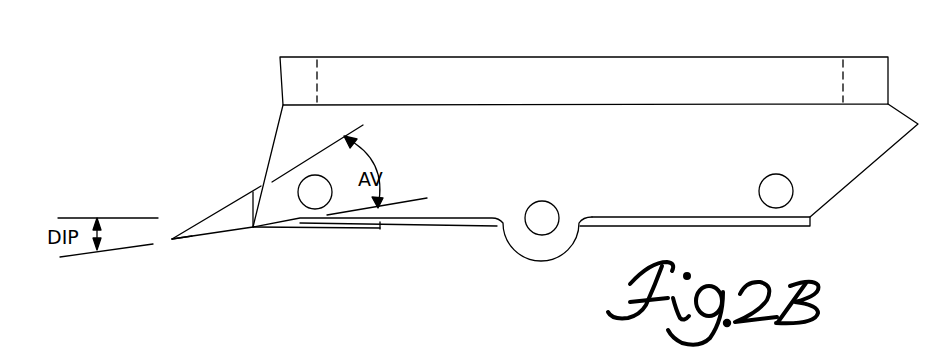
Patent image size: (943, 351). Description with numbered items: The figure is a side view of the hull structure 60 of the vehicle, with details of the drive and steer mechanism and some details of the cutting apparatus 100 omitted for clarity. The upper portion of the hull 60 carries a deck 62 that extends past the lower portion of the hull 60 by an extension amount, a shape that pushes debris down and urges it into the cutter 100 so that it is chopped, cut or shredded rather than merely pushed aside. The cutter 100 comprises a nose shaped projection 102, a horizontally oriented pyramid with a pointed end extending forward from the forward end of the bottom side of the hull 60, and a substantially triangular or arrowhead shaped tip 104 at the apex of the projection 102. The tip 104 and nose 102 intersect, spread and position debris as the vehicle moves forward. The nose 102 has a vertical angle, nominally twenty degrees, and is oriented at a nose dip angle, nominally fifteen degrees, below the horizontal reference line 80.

The hull structure 60 is at (617, 51).
The deck 62 is at (280, 71).
The horizontal reference line 80 is at (77, 218).
The cutting apparatus 100 is at (220, 205).
The nose shaped projection 102 is at (238, 232).
The tip 104 is at (184, 242).